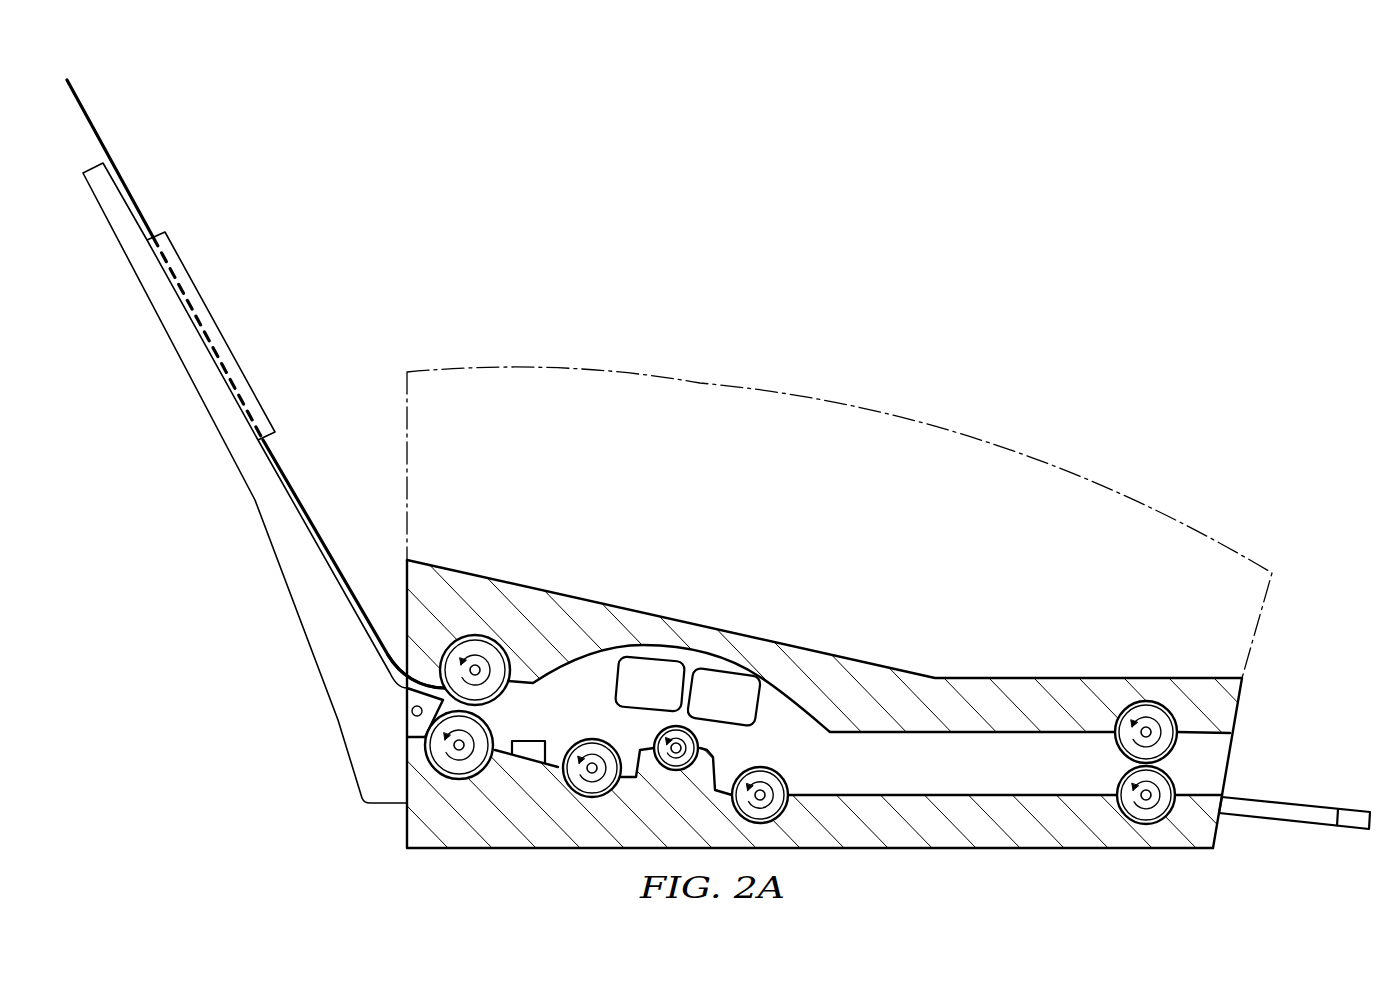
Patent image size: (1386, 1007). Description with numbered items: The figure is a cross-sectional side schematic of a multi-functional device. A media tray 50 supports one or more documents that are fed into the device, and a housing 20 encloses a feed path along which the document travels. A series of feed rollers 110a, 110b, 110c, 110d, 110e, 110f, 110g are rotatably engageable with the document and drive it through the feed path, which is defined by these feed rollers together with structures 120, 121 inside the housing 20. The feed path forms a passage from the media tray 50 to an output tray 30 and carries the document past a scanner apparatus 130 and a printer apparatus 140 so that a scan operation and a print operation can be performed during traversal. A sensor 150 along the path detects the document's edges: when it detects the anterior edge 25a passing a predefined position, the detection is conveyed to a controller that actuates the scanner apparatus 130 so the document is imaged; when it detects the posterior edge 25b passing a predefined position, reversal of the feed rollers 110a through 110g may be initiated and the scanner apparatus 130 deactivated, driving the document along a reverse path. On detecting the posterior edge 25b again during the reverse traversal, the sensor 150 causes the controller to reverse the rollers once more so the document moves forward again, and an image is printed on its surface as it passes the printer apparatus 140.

The housing 20 is at (822, 399).
The anterior edge 25a is at (448, 655).
The posterior edge 25b is at (83, 103).
The output tray 30 is at (1297, 804).
The media tray 50 is at (158, 310).
The feed roller 110a is at (507, 686).
The feed roller 110b is at (470, 779).
The feed roller 110c is at (597, 746).
The feed roller 110d is at (681, 770).
The feed roller 110e is at (764, 768).
The feed roller 110f is at (1153, 701).
The feed roller 110g is at (1121, 780).
The structure 120 is at (1050, 849).
The structure 121 is at (1017, 685).
The scanner apparatus 130 is at (656, 668).
The printer apparatus 140 is at (728, 685).
The sensor 150 is at (537, 754).